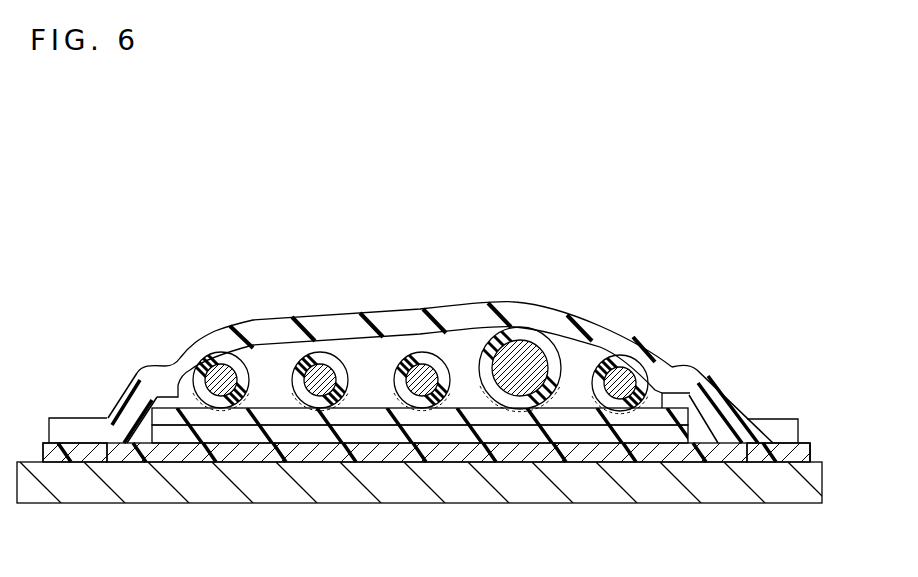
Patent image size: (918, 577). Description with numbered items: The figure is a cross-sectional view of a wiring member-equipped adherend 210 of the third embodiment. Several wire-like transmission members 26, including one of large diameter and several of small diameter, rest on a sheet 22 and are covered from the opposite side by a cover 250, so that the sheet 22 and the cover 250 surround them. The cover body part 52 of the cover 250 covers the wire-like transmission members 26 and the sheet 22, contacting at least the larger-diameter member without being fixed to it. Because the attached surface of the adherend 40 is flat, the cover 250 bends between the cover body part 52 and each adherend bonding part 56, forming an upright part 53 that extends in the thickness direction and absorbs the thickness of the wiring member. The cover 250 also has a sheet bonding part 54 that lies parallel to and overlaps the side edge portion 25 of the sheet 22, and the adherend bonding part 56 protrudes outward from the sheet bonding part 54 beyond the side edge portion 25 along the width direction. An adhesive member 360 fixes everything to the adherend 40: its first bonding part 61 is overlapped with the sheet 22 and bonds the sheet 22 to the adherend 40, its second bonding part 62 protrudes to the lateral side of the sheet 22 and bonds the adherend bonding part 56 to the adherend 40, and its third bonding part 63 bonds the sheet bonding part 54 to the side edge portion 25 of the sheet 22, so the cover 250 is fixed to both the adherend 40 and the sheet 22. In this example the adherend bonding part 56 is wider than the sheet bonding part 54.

The wiring member-equipped adherend 210 is at (150, 184).
The cover 250 is at (527, 294).
The wire-like transmission member 26 is at (250, 354).
The cover body part 52 is at (443, 310).
The upright part 53 is at (128, 398).
The sheet bonding part 54 is at (150, 369).
The third bonding part 63 is at (173, 398).
The adherend bonding part 56 is at (65, 426).
The second bonding part 62 is at (97, 455).
The side edge portion 25 is at (172, 437).
The sheet 22 is at (338, 447).
The first bonding part 61 is at (410, 453).
The adherend 40 is at (476, 495).
The adhesive member 360 is at (811, 439).